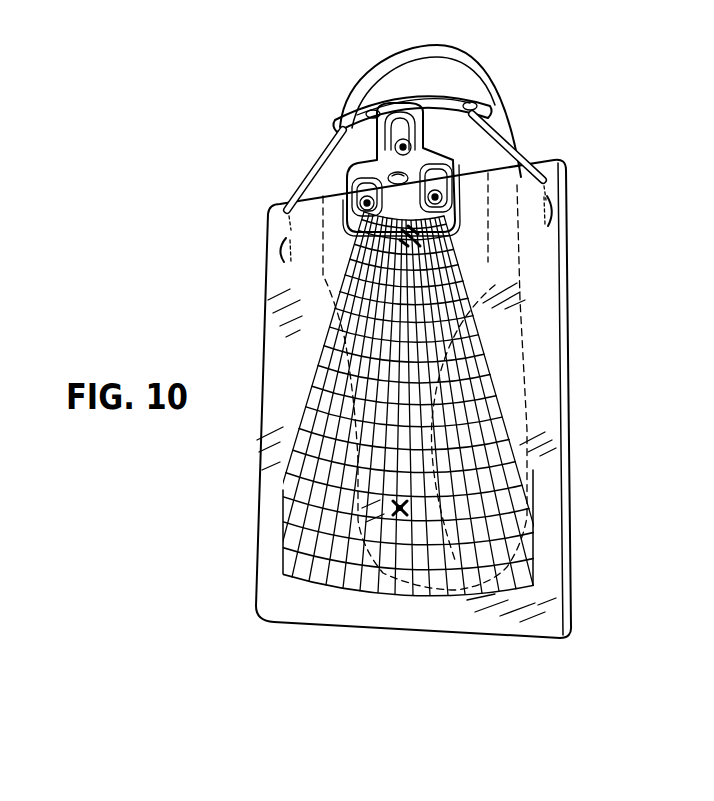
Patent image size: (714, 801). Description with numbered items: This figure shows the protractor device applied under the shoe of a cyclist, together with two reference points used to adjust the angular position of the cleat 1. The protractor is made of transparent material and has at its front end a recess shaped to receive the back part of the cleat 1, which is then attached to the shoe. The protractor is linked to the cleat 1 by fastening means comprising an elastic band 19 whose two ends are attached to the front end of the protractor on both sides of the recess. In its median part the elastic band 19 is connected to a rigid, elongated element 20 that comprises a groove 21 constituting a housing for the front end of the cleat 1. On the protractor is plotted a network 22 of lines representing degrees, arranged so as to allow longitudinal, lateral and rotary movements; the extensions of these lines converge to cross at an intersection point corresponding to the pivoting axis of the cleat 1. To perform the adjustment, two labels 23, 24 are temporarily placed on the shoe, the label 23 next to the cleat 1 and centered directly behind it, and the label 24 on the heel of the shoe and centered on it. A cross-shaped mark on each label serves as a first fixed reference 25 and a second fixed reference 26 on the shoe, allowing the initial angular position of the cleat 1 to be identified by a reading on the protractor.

The cleat 1 is at (377, 163).
The elastic band 19 is at (513, 148).
The rigid elongated element 20 is at (470, 102).
The groove 21 is at (373, 112).
The network of lines 22 is at (527, 556).
The label 23 is at (388, 278).
The label 24 is at (388, 552).
The first fixed reference 25 is at (412, 242).
The second fixed reference 26 is at (400, 508).